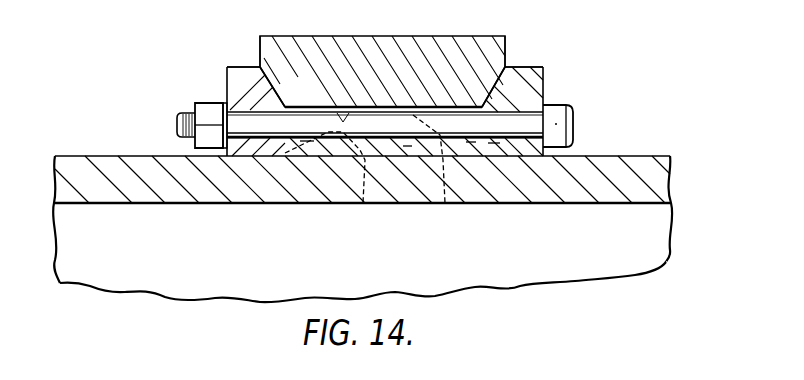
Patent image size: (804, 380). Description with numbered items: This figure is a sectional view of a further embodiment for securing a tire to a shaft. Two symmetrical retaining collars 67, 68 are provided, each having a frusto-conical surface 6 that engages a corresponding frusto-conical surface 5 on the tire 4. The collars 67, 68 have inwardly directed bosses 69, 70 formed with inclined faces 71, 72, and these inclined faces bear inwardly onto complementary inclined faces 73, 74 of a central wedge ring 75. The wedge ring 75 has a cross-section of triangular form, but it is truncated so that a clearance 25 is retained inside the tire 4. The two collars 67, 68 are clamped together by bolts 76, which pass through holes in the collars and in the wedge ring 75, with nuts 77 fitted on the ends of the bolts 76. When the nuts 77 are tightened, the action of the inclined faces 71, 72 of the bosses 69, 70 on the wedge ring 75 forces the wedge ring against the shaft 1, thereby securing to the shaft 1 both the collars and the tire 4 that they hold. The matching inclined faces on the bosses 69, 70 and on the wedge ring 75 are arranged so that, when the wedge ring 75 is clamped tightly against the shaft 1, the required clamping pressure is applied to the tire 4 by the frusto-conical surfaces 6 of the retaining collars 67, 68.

The shaft 1 is at (138, 190).
The tire 4 is at (385, 62).
The frusto-conical surfaces 5 is at (263, 87).
The frusto-conical surfaces 6 is at (260, 87).
The clearance 25 is at (450, 107).
The retaining collar 67 is at (235, 82).
The retaining collar 68 is at (523, 92).
The inwardly directed boss 69 is at (307, 140).
The inwardly directed boss 70 is at (493, 143).
The inclined face 71 is at (307, 140).
The inclined face 72 is at (470, 142).
The inclined face 73 is at (331, 174).
The inclined face 74 is at (436, 175).
The central wedge ring 75 is at (407, 147).
The bolts 76 is at (242, 120).
The nuts 77 is at (196, 140).